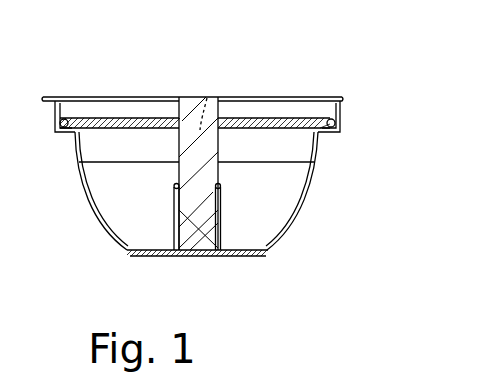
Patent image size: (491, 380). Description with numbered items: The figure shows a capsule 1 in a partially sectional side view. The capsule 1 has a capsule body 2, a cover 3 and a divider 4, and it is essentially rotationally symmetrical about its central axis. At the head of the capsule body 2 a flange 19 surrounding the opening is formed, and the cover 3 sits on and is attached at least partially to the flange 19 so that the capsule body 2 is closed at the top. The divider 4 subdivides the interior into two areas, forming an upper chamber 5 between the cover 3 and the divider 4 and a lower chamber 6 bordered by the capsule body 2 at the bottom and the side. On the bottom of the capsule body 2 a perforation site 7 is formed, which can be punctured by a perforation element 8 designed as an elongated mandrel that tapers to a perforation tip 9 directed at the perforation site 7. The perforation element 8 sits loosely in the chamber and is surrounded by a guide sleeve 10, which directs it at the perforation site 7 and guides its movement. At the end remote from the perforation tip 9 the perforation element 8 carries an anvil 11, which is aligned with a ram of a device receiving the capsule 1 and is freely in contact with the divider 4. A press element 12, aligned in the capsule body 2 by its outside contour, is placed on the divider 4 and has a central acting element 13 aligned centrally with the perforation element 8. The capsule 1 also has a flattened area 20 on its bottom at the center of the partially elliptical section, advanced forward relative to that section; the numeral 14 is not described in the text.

The capsule 1 is at (384, 95).
The capsule body 2 is at (272, 202).
The cover 3 is at (297, 98).
The divider 4 is at (289, 130).
The upper chamber 5 is at (301, 213).
The lower chamber 6 is at (76, 108).
The perforation site 7 is at (197, 258).
The perforation element 8 is at (224, 203).
The perforation tip 9 is at (223, 237).
The guide sleeve 10 is at (173, 215).
The anvil 11 is at (172, 146).
The press element 12 is at (207, 98).
The acting element 13 is at (195, 98).
The element (adjacent figure) 14 is at (484, 282).
The flange 19 is at (55, 98).
The flattened area 20 is at (235, 258).